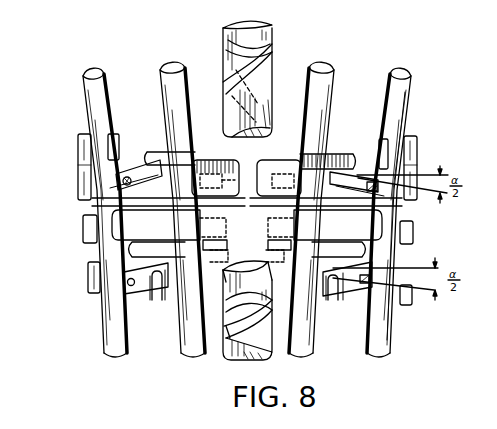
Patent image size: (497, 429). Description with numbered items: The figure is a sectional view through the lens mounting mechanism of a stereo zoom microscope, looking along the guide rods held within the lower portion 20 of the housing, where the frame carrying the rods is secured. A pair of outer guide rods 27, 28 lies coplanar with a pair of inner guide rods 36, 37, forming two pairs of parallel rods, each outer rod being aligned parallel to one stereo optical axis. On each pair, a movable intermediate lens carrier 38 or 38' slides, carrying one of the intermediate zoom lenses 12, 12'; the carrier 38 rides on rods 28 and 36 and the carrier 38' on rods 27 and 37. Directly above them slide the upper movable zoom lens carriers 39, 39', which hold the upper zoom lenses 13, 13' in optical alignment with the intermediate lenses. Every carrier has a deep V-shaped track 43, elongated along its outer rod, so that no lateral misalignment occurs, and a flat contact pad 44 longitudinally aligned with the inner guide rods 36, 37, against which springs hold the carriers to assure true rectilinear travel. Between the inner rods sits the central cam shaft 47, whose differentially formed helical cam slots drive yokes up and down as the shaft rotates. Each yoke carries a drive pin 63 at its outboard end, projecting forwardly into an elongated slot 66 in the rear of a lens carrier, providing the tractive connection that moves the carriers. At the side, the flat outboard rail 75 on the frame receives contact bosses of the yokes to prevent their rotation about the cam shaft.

The outer guide rod 27 is at (84, 92).
The inner guide rod 37 is at (162, 92).
The inner guide rod 36 is at (335, 96).
The lower portion 20 is at (411, 102).
The outer guide rod 28 is at (410, 121).
The V-shaped track 43 is at (114, 135).
The elongated slot 66 is at (142, 164).
The drive pin 63 is at (128, 176).
The movable zoom lens carrier 39' is at (62, 167).
The movable zoom lens carrier 39 is at (434, 168).
The movable intermediate lens carrier 38' is at (77, 290).
The movable intermediate lens carrier 38 is at (421, 314).
The outboard rail 75 is at (9, 188).
The upper movable zoom system lens 13 is at (192, 166).
The upper movable zoom system lens 13' is at (306, 169).
The central cam shaft 47 is at (275, 70).
The intermediate movable zoom system lens 12 is at (255, 310).
The intermediate movable zoom system lens 12' is at (215, 255).
The flat contact pad 44 is at (261, 193).